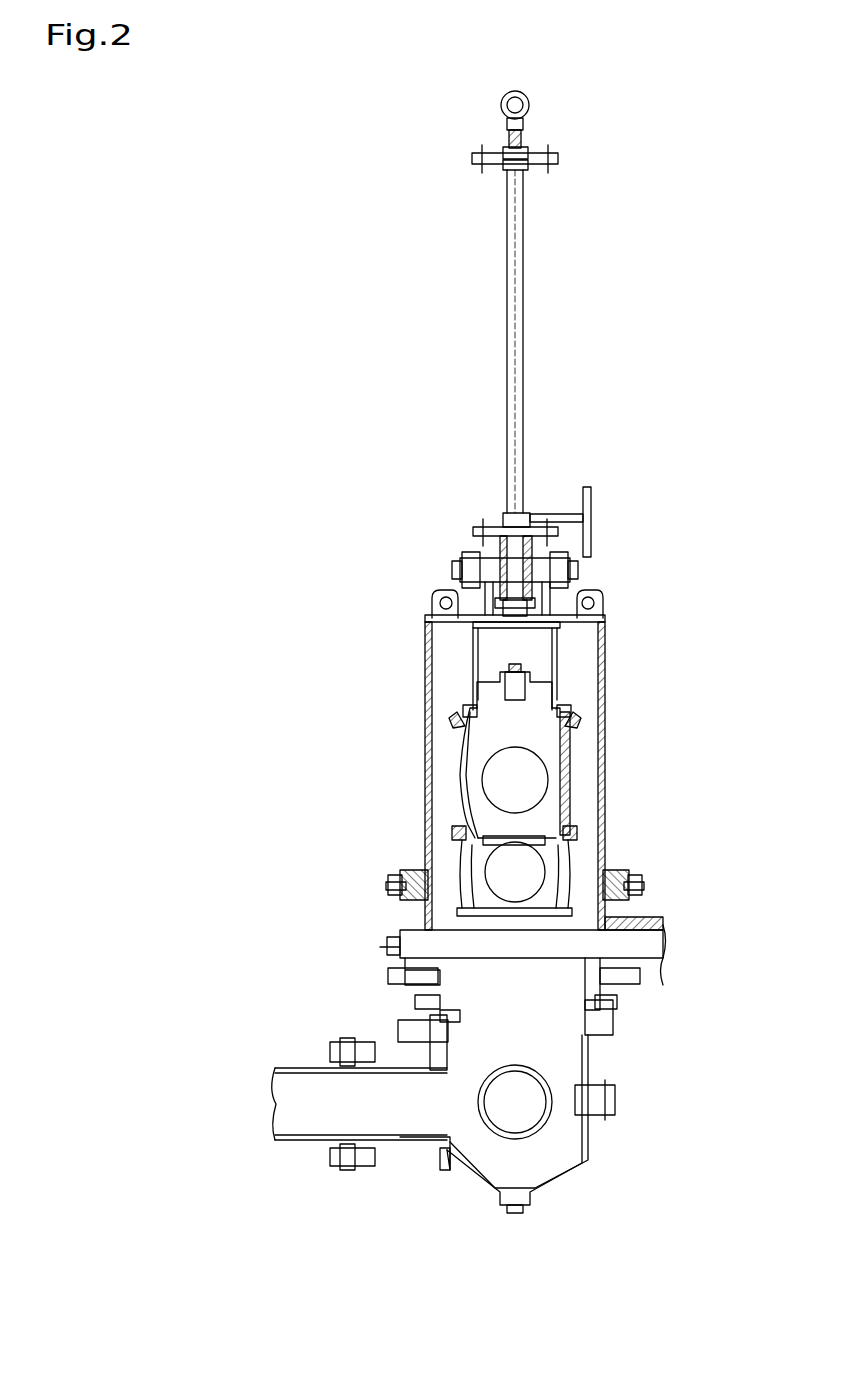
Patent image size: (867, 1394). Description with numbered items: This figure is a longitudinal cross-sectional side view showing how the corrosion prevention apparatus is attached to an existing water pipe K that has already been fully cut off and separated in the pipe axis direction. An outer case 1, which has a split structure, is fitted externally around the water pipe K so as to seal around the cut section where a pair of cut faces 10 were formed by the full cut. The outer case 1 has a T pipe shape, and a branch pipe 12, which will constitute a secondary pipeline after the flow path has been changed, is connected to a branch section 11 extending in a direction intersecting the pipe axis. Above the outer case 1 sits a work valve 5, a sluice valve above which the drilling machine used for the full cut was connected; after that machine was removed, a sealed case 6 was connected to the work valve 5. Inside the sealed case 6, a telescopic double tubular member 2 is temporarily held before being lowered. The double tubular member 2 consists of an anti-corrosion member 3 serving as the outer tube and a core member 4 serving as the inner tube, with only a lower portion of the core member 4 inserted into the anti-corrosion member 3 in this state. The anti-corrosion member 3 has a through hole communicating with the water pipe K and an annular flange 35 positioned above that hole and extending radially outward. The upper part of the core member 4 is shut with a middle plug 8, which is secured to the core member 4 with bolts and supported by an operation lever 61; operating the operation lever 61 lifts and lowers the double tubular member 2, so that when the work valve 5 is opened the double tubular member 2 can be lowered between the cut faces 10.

The outer case 1 is at (478, 1182).
The double tubular member 2 is at (446, 780).
The anti-corrosion member 3 is at (575, 832).
The core member 4 is at (570, 755).
The work valve 5 is at (392, 938).
The sealed case 6 is at (427, 665).
The middle plug 8 is at (575, 715).
The cut face 10 is at (503, 1068).
The branch section 11 is at (405, 1150).
The branch pipe 12 is at (300, 1140).
The flange 35 is at (517, 838).
The operation lever 61 is at (515, 453).
The water pipe K is at (530, 1138).